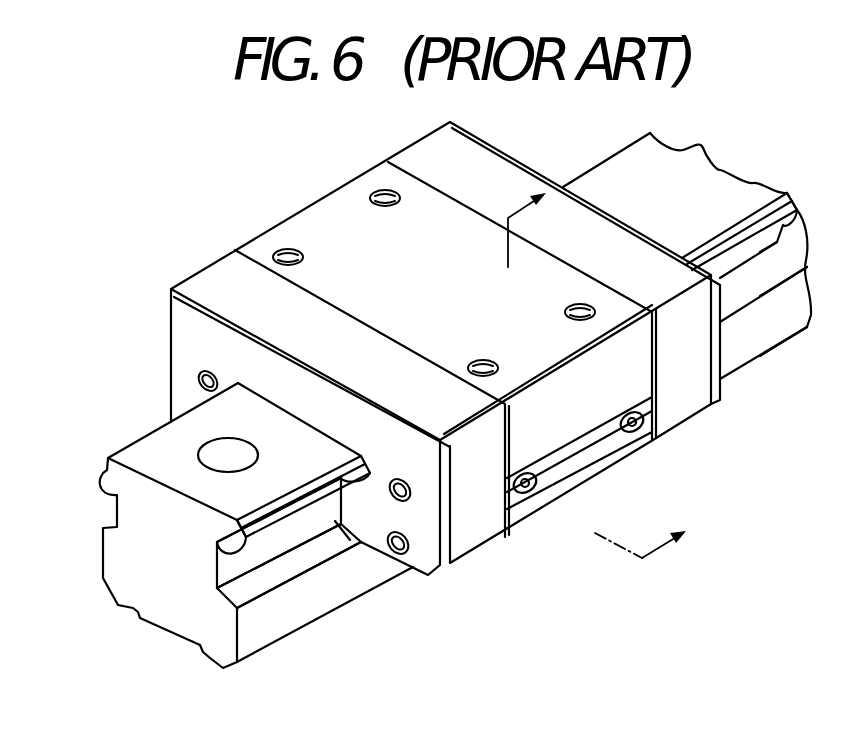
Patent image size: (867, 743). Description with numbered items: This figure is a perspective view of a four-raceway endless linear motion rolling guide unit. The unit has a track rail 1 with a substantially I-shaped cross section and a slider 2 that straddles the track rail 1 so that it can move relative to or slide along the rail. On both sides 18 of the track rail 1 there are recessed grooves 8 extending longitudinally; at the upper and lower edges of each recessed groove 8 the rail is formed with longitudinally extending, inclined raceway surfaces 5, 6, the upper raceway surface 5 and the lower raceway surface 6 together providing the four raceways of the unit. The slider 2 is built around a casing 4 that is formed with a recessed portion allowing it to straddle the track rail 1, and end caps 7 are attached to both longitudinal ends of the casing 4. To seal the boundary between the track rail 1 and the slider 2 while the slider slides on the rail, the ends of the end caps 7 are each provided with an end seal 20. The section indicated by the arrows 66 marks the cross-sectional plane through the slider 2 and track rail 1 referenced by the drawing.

The track rail 1 is at (690, 185).
The slider 2 is at (545, 513).
The casing 4 is at (317, 218).
The upper raceway surface 5 is at (787, 220).
The lower raceway surface 6 is at (757, 292).
The end cap 7 is at (412, 156).
The recessed groove 8 is at (777, 244).
The side of track rail 18 is at (738, 353).
The end seal 20 is at (171, 316).
The section line 66 is at (603, 367).